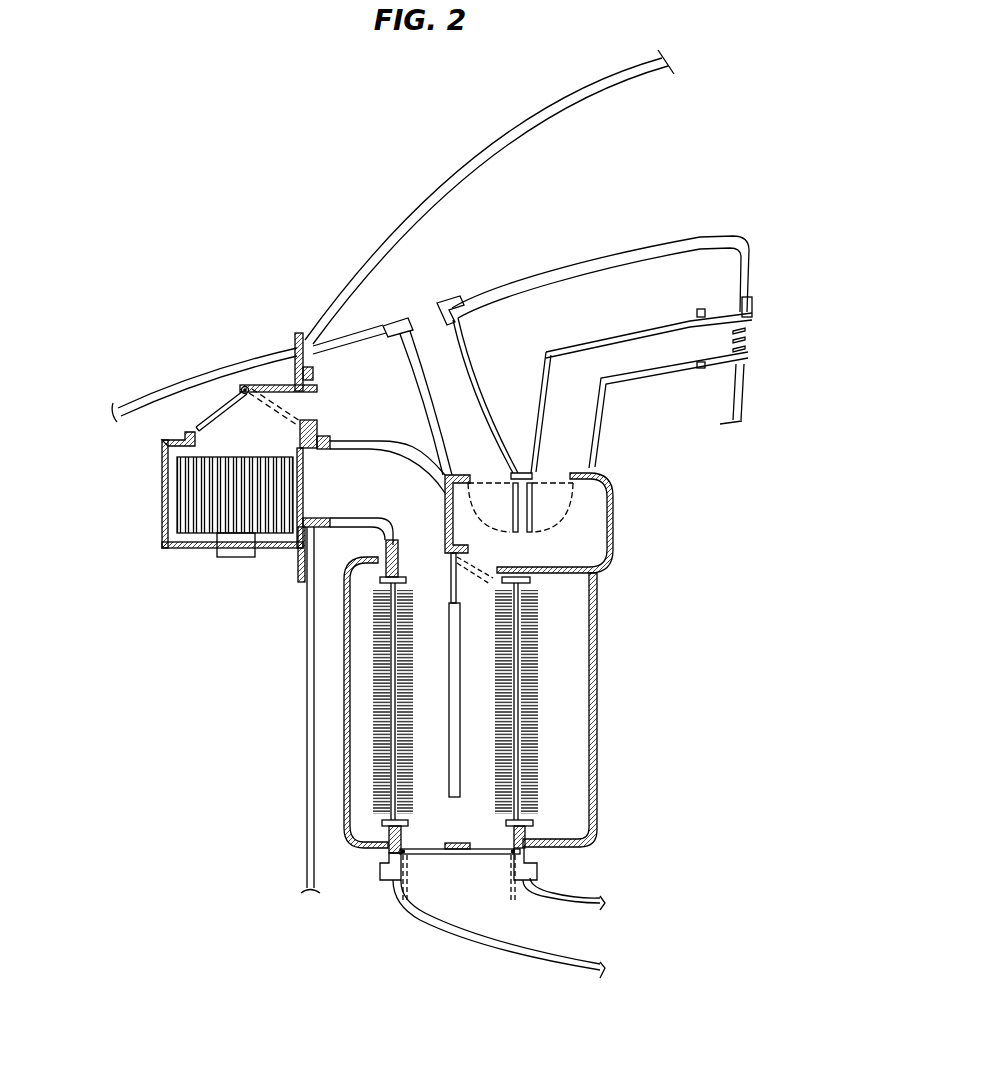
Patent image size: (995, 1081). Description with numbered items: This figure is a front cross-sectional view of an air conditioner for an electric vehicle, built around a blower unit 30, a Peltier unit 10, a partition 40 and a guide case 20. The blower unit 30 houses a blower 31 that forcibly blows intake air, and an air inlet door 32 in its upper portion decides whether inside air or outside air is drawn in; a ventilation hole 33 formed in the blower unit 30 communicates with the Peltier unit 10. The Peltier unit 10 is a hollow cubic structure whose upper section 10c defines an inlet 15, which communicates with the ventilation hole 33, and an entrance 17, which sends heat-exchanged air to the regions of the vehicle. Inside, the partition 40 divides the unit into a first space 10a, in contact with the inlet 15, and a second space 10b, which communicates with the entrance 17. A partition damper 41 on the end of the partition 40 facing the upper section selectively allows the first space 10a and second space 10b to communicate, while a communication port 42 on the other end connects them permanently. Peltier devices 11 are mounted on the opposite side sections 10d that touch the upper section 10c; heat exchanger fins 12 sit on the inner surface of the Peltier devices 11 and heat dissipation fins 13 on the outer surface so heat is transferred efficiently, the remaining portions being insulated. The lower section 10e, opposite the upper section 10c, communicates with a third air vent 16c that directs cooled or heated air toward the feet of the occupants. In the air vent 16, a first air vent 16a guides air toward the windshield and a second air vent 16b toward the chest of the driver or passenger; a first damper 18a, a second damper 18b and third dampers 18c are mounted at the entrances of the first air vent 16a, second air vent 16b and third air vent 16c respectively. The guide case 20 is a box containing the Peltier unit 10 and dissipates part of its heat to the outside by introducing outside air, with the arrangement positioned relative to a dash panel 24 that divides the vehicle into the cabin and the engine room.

The Peltier unit 10 is at (549, 679).
The first space 10a is at (428, 679).
The second space 10b is at (540, 608).
The upper section 10c is at (567, 568).
The opposite side sections 10d is at (590, 641).
The lower section 10e is at (557, 855).
The Peltier devices 11 is at (380, 775).
The heat exchanger fins 12 is at (430, 815).
The heat dissipation fins 13 is at (395, 738).
The inlet 15 is at (410, 540).
The air vent 16 is at (628, 188).
The first air vent 16a is at (453, 358).
The second air vent 16b is at (602, 360).
The third air vent 16c is at (525, 946).
The entrance 17 is at (492, 565).
The first damper 18a is at (518, 497).
The second damper 18b is at (533, 502).
The third dampers 18c is at (477, 855).
The guide case 20 is at (598, 800).
The dash panel 24 is at (307, 863).
The blower unit 30 is at (185, 548).
The blower 31 is at (198, 497).
The air inlet door 32 is at (210, 413).
The ventilation hole 33 is at (288, 457).
The partition 40 is at (540, 748).
The partition damper 41 is at (383, 598).
The communication port 42 is at (535, 812).